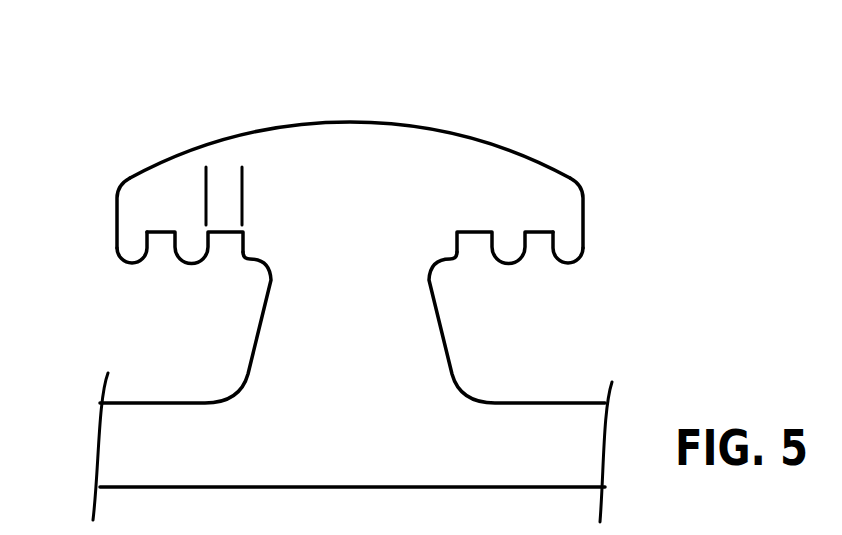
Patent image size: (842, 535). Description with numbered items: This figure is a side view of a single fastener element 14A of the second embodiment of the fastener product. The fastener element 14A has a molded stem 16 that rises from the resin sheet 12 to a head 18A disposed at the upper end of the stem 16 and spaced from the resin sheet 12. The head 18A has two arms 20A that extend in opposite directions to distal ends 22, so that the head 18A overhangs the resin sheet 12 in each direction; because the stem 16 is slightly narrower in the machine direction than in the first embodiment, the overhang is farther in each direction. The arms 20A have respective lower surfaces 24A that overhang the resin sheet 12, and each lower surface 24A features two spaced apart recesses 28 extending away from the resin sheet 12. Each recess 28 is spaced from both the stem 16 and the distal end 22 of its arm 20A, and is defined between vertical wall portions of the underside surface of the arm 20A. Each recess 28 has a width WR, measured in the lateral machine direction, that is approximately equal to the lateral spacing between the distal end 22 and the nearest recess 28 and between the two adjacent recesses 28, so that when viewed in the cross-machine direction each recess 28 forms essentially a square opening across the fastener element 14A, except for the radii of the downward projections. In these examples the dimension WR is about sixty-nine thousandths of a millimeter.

The fastener element 14A is at (274, 101).
The head 18A is at (440, 132).
The arm 20A is at (167, 162).
The distal end 22 is at (115, 232).
The lower surface 24A is at (156, 287).
The recess 28 is at (484, 270).
The recess width WR is at (150, 202).
The stem 16 is at (455, 373).
The resin sheet 12 is at (427, 487).